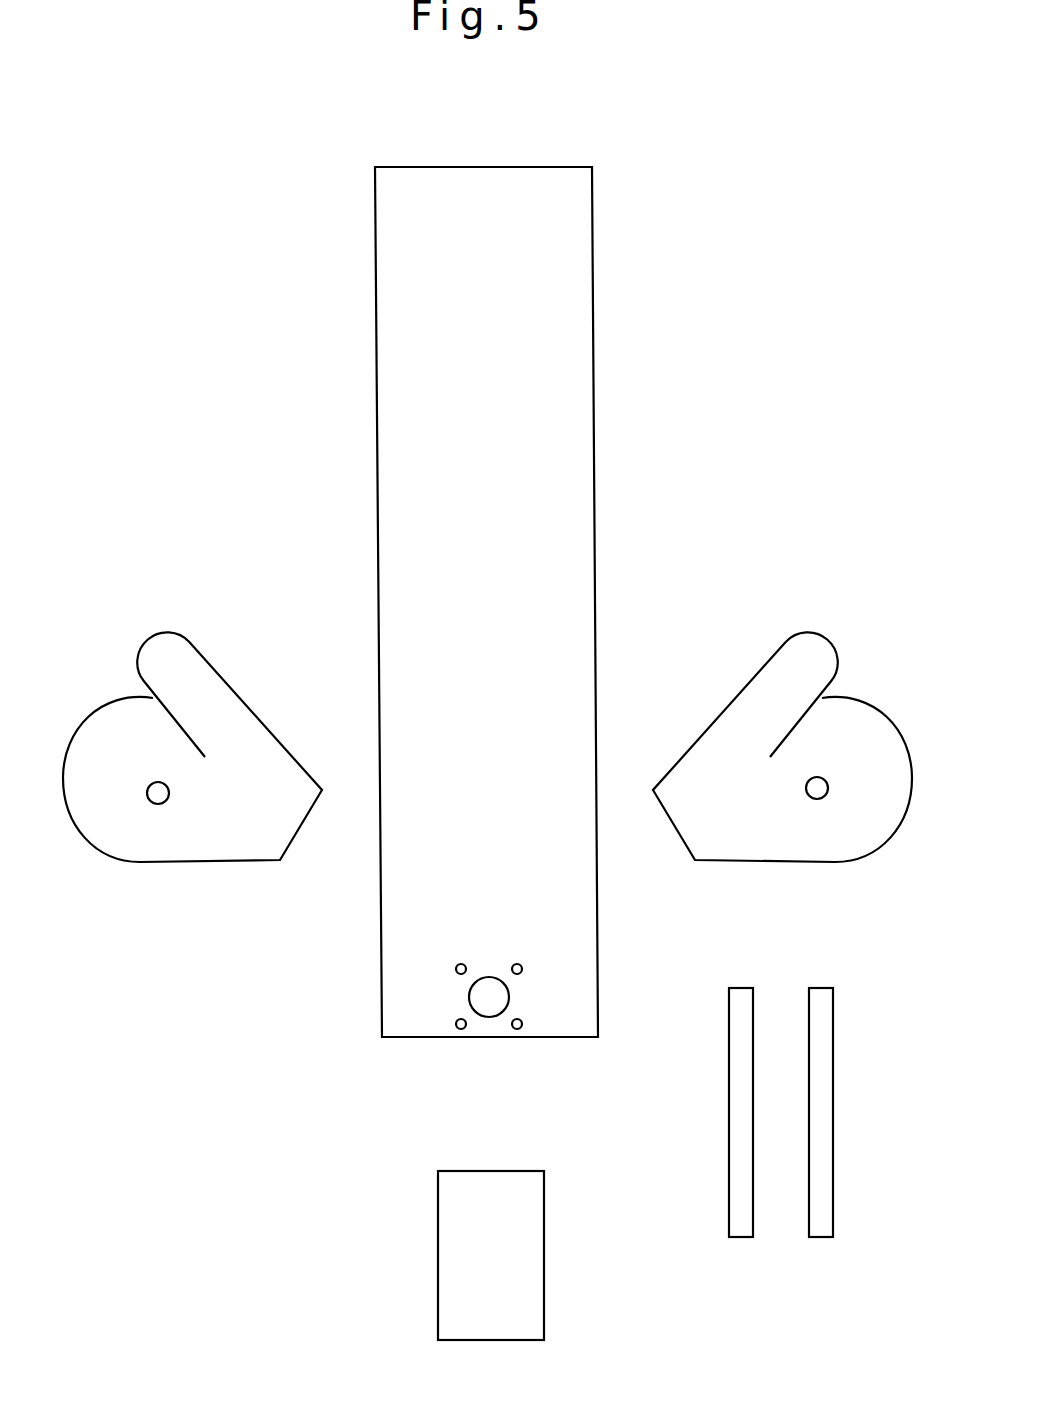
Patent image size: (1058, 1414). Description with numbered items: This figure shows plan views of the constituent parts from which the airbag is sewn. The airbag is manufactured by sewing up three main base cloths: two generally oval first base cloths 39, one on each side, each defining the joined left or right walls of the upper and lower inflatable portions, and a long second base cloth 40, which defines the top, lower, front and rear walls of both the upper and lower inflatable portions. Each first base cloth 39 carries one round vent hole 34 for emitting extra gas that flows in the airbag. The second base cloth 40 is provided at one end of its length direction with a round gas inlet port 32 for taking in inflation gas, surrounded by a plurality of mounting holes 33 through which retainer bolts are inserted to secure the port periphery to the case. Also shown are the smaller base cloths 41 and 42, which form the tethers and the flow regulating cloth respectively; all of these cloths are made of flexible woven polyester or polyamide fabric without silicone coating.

The second base cloth 40 is at (595, 343).
The first base cloth 39 is at (256, 706).
The vent hole 34 is at (147, 800).
The mounting holes 33 is at (520, 1020).
The gas inlet port 32 is at (483, 1010).
The base cloth 42 is at (552, 1214).
The base cloth 41 is at (820, 1242).